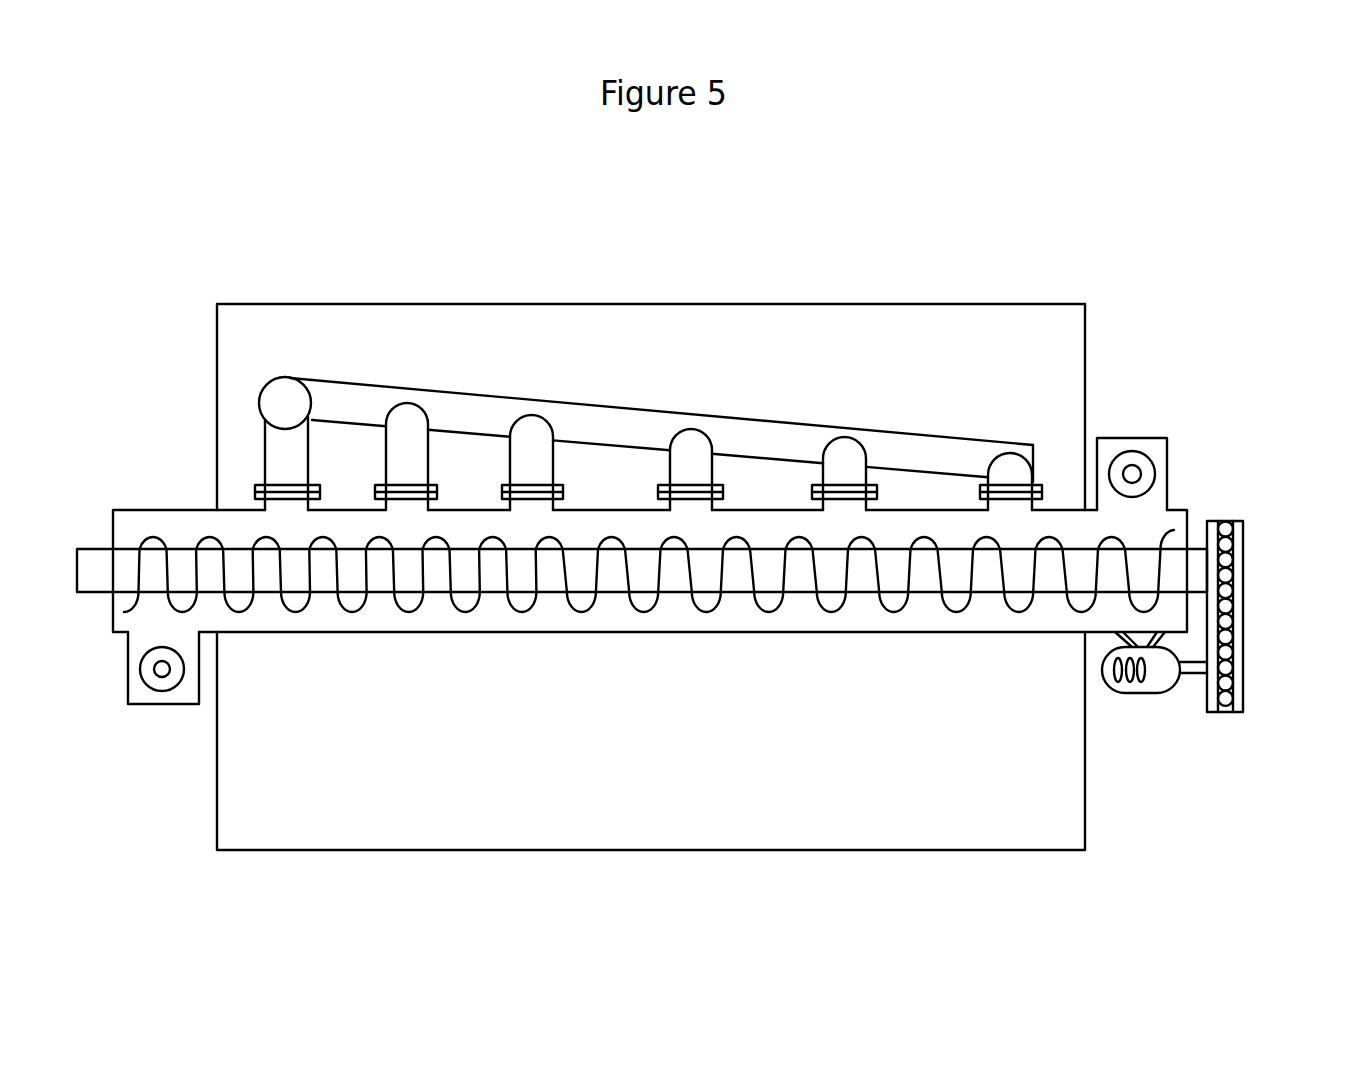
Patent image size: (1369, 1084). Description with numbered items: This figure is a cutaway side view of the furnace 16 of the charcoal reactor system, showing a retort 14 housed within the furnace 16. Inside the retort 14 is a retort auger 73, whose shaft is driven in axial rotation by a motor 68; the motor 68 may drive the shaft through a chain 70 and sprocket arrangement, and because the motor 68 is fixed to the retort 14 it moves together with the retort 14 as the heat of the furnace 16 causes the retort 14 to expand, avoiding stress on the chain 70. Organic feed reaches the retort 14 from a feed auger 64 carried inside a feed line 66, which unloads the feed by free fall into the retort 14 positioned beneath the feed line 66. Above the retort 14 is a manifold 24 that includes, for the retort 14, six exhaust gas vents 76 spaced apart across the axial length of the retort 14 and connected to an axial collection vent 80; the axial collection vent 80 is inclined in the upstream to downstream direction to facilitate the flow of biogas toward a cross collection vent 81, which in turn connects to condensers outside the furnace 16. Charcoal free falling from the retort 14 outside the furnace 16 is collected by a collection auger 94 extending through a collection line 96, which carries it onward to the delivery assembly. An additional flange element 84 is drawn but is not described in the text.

The retort 14 is at (877, 632).
The furnace 16 is at (975, 304).
The manifold 24 is at (614, 379).
The retort auger 73 is at (1000, 613).
The axial collection vent 80 is at (873, 430).
The cross collection vent 81 is at (288, 377).
The nozzle flange 84 is at (723, 492).
The exhaust gas vent 76 is at (1042, 504).
The feed line 66 is at (1162, 437).
The feed auger 64 is at (1167, 475).
The chain 70 is at (1243, 580).
The motor 68 is at (1132, 693).
The collection auger 94 is at (127, 667).
The collection line 96 is at (163, 705).